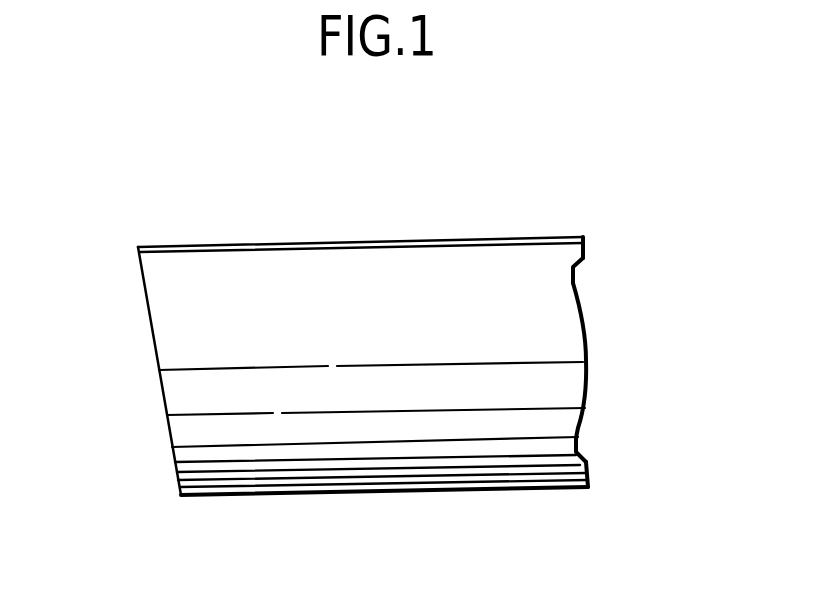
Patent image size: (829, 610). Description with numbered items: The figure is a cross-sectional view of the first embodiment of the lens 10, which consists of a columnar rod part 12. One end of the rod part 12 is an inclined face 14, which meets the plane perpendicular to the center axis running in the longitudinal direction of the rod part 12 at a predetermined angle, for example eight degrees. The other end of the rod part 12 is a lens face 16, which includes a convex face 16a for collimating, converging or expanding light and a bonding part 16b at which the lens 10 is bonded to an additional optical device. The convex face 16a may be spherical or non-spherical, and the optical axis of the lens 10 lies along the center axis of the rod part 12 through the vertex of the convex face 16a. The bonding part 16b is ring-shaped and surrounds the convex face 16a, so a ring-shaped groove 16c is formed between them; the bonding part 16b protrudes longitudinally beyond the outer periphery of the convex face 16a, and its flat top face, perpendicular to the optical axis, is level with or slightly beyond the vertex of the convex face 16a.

The lens 10 is at (524, 193).
The rod part 12 is at (328, 258).
The inclined face 14 is at (158, 382).
The lens face 16 is at (665, 344).
The convex face 16a is at (586, 380).
The bonding part 16b is at (583, 246).
The ring-shaped groove 16c is at (575, 285).